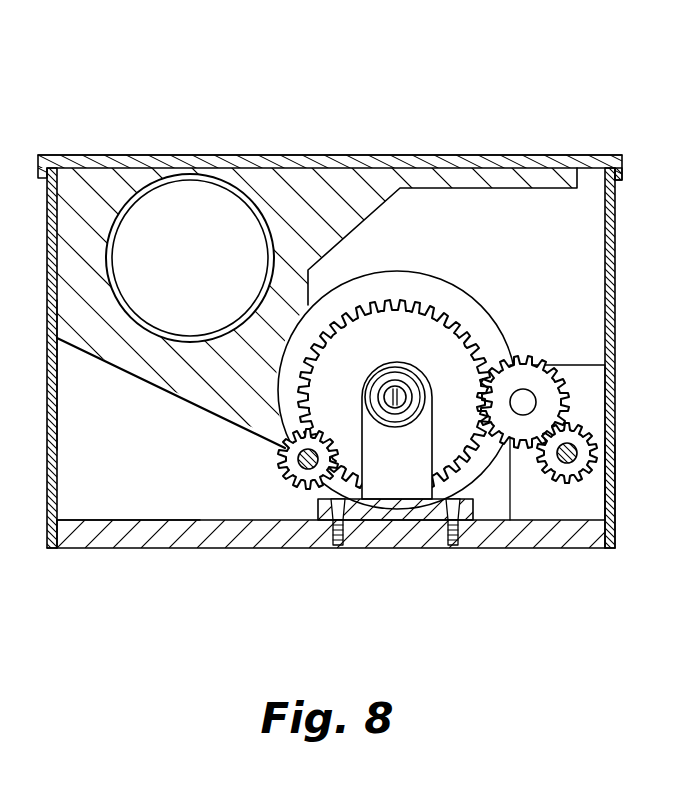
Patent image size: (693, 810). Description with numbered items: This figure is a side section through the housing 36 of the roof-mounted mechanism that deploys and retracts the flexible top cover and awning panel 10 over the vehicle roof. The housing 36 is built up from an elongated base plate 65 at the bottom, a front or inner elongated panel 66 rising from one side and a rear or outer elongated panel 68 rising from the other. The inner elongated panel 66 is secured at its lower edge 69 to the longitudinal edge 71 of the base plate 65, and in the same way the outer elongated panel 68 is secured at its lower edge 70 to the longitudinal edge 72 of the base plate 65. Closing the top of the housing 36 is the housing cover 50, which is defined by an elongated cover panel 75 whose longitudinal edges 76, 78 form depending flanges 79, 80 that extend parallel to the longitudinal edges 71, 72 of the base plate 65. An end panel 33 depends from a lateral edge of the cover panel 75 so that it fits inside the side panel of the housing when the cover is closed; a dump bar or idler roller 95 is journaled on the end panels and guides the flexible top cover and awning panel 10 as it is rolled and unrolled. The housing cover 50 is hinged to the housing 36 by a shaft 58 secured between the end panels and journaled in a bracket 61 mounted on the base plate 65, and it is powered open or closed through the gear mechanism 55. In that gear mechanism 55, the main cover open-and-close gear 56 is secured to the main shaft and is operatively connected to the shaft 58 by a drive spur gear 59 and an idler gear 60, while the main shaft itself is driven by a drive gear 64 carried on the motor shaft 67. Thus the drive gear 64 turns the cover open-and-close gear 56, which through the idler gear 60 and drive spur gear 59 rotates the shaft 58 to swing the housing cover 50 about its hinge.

The depending flange 79 is at (38, 170).
The longitudinal edge 76 is at (47, 168).
The dump bar or idler roller 95 is at (195, 203).
The elongated cover panel 75 is at (318, 146).
The end panel 33 is at (333, 195).
The housing cover 50 is at (418, 146).
The longitudinal edge 78 is at (622, 176).
The depending flange 80 is at (624, 177).
The flexible top cover and awning panel 10 is at (373, 273).
The main cover open-and-close gear 56 is at (423, 328).
The gear mechanism 55 is at (499, 291).
The idler gear 60 is at (535, 355).
The bracket 61 is at (596, 372).
The front or inner elongated panel 66 is at (57, 385).
The motor shaft 67 is at (290, 451).
The drive gear 64 is at (290, 475).
The longitudinal edge 71 is at (70, 532).
The lower edge 69 is at (53, 548).
The elongated base plate 65 is at (398, 535).
The housing 36 is at (497, 552).
The drive spur gear 59 is at (555, 495).
The longitudinal edge 72 is at (607, 503).
The rear or outer elongated panel 68 is at (612, 497).
The lower edge 70 is at (616, 548).
The shaft 58 is at (572, 453).